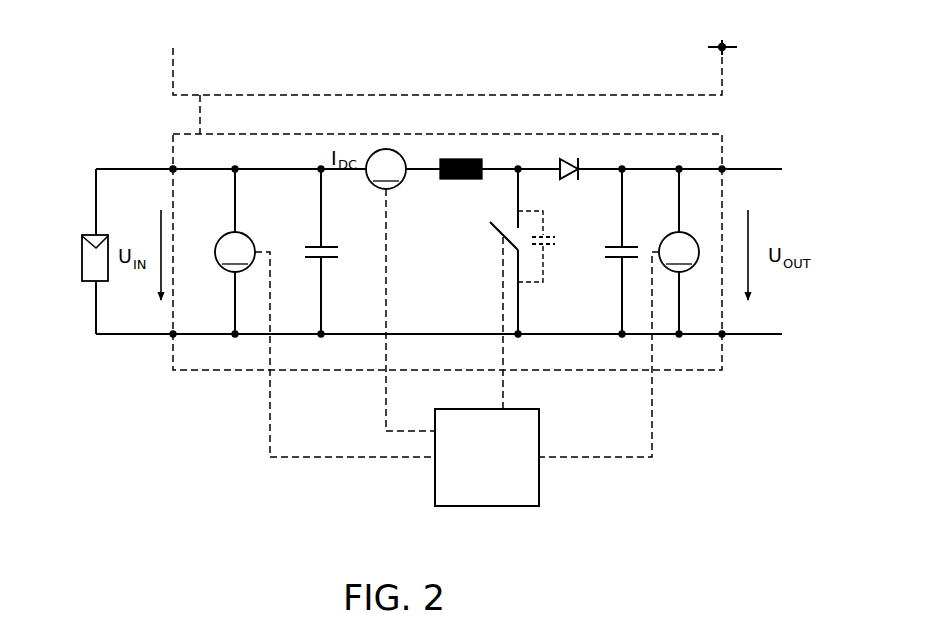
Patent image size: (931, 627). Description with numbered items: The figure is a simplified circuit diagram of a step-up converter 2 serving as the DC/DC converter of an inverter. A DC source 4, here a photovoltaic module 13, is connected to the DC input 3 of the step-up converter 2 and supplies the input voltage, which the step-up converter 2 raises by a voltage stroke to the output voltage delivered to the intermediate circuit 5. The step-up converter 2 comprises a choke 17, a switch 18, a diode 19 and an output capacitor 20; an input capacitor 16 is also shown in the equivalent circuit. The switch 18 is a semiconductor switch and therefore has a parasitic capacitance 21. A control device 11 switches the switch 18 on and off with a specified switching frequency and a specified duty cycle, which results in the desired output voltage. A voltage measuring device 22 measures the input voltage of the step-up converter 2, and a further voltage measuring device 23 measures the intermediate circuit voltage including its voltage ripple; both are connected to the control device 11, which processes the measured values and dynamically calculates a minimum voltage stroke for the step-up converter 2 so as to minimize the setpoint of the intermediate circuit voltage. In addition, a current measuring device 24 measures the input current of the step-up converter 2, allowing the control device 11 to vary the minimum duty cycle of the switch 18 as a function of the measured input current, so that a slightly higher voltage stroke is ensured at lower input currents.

The step-up converter 2 is at (203, 82).
The DC input 3 is at (168, 163).
The DC source 4 is at (112, 163).
The intermediate circuit 5 is at (787, 328).
The control device 11 is at (435, 478).
The photovoltaic module 13 is at (80, 256).
The input capacitor 16 is at (305, 253).
The choke 17 is at (462, 158).
The switch 18 is at (493, 228).
The diode 19 is at (563, 163).
The output capacitor 20 is at (605, 253).
The parasitic capacitance 21 is at (558, 237).
The voltage measuring device 22 is at (325, 313).
The voltage measuring device 23 is at (619, 313).
The current measuring device 24 is at (400, 290).